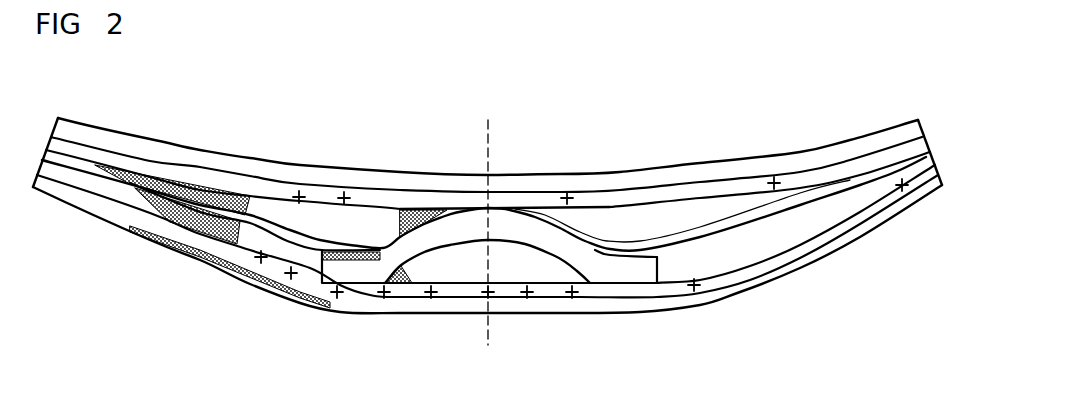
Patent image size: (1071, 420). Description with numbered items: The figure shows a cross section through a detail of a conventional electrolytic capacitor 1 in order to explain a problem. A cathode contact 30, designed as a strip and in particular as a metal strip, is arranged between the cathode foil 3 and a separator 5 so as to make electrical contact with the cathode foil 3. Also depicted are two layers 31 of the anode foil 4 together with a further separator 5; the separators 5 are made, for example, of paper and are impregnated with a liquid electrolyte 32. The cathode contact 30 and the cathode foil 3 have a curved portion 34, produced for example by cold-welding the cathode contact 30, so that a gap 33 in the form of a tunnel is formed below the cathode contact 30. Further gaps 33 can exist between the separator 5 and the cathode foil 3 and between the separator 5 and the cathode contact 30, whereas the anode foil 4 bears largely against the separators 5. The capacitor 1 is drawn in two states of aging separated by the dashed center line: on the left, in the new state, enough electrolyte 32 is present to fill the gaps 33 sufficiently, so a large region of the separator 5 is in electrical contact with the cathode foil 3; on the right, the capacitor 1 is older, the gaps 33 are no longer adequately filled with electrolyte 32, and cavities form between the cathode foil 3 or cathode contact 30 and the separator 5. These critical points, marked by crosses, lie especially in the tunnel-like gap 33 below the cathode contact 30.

The electrolytic capacitor 1 is at (868, 80).
The cathode foil 3 is at (380, 247).
The cathode contact 30 is at (453, 237).
The layers of the anode foil 31 is at (762, 163).
The liquid electrolyte 32 is at (400, 210).
The gap 33 is at (617, 212).
The curved portion 34 is at (470, 222).
The anode foil 4 is at (702, 174).
The separator 5 is at (135, 207).